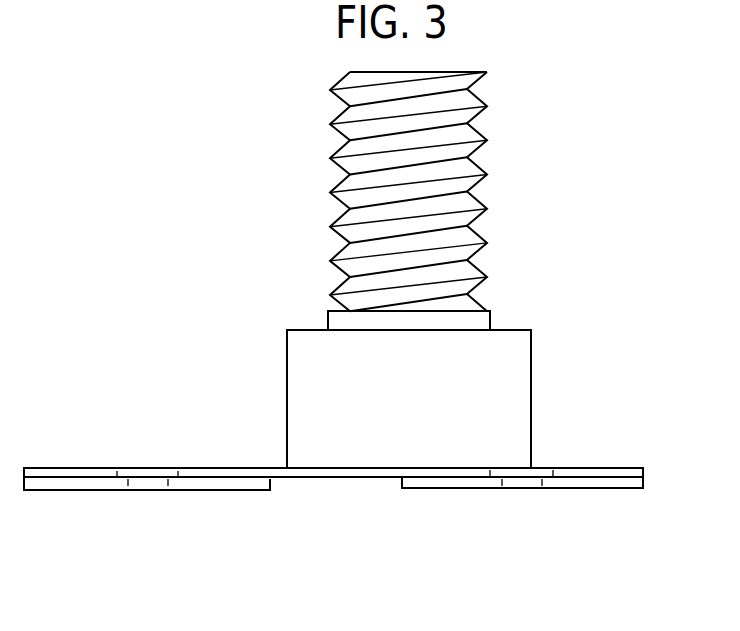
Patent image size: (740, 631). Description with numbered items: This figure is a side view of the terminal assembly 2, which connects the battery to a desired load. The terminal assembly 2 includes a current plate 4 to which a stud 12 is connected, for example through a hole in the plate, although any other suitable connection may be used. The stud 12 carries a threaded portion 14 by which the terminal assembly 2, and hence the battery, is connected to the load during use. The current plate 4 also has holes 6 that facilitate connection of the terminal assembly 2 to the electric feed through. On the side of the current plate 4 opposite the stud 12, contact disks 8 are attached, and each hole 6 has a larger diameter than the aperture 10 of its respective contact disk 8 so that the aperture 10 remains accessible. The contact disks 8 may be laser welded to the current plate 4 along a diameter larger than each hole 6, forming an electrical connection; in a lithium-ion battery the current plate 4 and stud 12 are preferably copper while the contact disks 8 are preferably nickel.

The terminal assembly 2 is at (512, 287).
The current plate 4 is at (622, 470).
The holes 6 is at (147, 470).
The contact disk 8 is at (108, 483).
The aperture 10 is at (150, 485).
The stud 12 is at (302, 328).
The threaded portion 14 is at (482, 147).